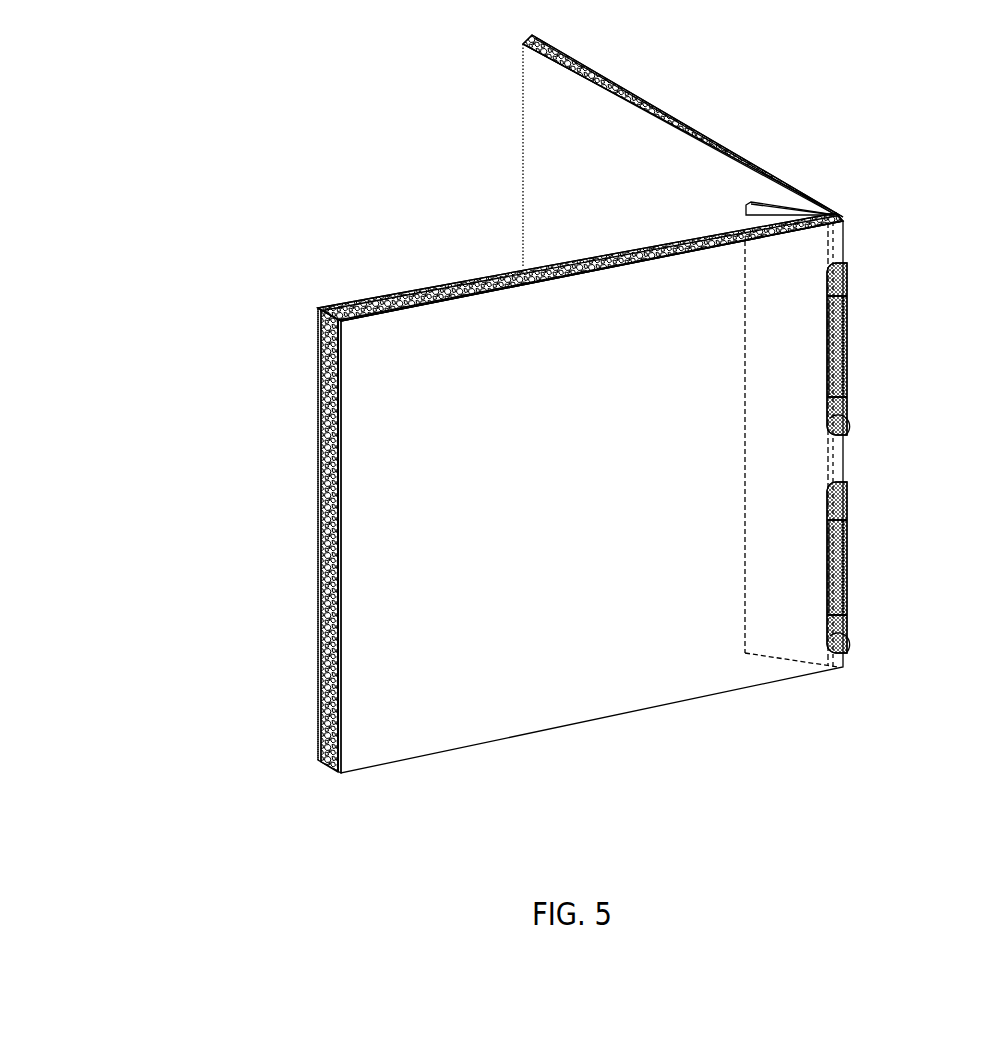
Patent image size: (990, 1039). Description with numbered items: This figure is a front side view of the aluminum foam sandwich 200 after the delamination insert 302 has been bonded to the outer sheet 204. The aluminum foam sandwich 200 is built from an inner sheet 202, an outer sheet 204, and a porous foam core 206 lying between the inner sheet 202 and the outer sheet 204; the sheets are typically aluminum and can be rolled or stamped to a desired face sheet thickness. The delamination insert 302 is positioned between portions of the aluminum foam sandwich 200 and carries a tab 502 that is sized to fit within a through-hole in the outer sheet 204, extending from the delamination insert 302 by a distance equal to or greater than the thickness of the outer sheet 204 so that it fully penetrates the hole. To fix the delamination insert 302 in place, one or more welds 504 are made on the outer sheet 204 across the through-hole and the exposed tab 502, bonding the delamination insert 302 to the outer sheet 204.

The aluminum foam sandwich 200 is at (230, 123).
The inner sheet 202 is at (542, 155).
The outer sheet 204 is at (590, 672).
The porous foam core 206 is at (359, 310).
The delamination insert 302 is at (768, 403).
The tab 502 is at (848, 347).
The weld 504 is at (847, 318).